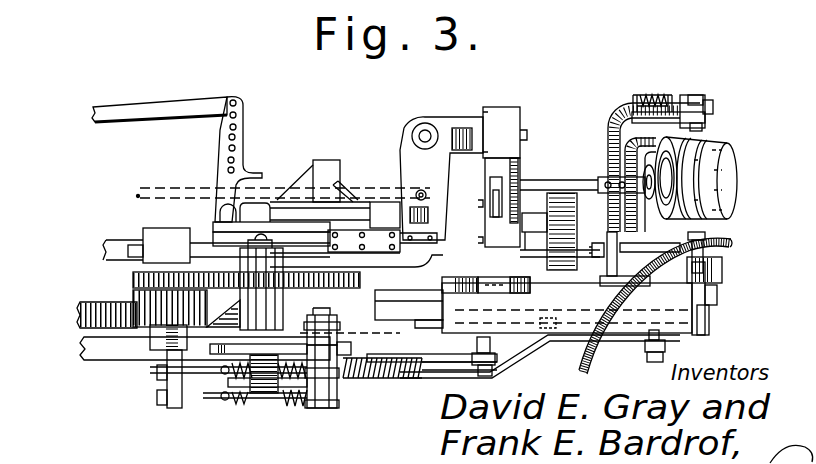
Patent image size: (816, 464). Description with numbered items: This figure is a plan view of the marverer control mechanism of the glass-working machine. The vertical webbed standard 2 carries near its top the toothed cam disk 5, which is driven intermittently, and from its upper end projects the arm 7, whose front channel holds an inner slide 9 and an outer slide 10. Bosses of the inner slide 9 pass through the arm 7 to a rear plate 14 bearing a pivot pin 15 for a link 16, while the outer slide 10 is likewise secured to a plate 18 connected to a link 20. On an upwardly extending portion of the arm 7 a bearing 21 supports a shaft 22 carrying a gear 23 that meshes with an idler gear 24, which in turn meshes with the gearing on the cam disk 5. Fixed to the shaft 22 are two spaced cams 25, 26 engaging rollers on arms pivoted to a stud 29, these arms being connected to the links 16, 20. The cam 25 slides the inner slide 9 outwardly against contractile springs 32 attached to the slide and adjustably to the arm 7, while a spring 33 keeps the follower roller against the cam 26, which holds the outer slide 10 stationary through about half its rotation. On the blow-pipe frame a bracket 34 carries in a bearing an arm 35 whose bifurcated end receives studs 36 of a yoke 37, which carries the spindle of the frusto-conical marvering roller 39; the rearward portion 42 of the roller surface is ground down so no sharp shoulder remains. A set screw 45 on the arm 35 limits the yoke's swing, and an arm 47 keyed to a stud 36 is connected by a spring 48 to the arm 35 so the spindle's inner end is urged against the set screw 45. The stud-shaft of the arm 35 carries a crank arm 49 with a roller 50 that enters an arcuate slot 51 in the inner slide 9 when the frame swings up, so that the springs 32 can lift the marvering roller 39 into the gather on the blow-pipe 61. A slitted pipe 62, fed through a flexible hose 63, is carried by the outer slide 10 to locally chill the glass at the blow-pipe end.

The webbed standard 2 is at (111, 352).
The cam disk 5 is at (89, 303).
The projecting arm 7 is at (356, 267).
The inner slide 9 is at (448, 285).
The outer slide 10 is at (717, 300).
The plate 14 is at (428, 320).
The pivot pin 15 is at (505, 354).
The link 16 is at (420, 362).
The plate 18 is at (707, 317).
The link 20 is at (533, 355).
The bearing 21 is at (258, 307).
The shaft 22 is at (265, 372).
The gear 23 is at (293, 268).
The idler gear 24 is at (137, 273).
The cam 25 is at (218, 360).
The cam 26 is at (288, 403).
The stud 29 is at (333, 302).
The contractile springs 32 is at (340, 378).
The spring 33 is at (235, 400).
The bracket 34 is at (530, 208).
The arm 35 is at (583, 177).
The studs 36 is at (713, 112).
The yoke 37 is at (657, 93).
The marvering roller 39 is at (735, 170).
The rearward portion 42 is at (660, 142).
The set screw 45 is at (645, 178).
The arm 47 is at (703, 101).
The spring 48 is at (641, 94).
The crank arm 49 is at (530, 259).
The roller 50 is at (480, 277).
The arcuate slot 51 is at (467, 277).
The blow-pipe 61 is at (352, 192).
The pipe 62 is at (616, 245).
The hose 63 is at (634, 297).